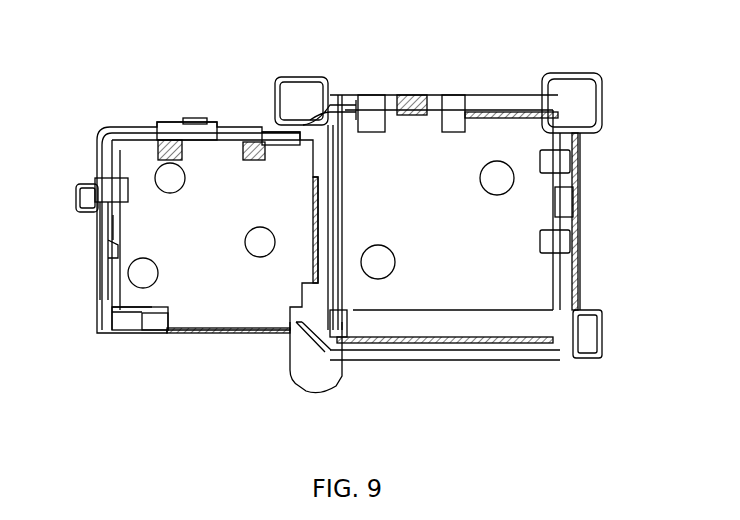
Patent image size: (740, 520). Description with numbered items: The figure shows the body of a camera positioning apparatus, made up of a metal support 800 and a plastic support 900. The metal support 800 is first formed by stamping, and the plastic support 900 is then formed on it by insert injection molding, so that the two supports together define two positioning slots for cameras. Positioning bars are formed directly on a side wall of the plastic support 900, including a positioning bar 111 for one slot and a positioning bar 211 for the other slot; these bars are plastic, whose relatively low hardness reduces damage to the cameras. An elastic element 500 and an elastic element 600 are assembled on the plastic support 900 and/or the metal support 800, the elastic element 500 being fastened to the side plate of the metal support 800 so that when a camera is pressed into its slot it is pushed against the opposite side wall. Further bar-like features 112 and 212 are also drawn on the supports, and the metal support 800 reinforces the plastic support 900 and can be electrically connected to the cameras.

The positioning bar 111 is at (277, 118).
The second hook portion 112 is at (130, 310).
The positioning bar 211 is at (338, 118).
The second engaging wall 212 is at (350, 337).
The elastic element 500 is at (100, 193).
The elastic element 600 is at (563, 240).
The metal support 800 is at (193, 305).
The plastic support 900 is at (498, 100).